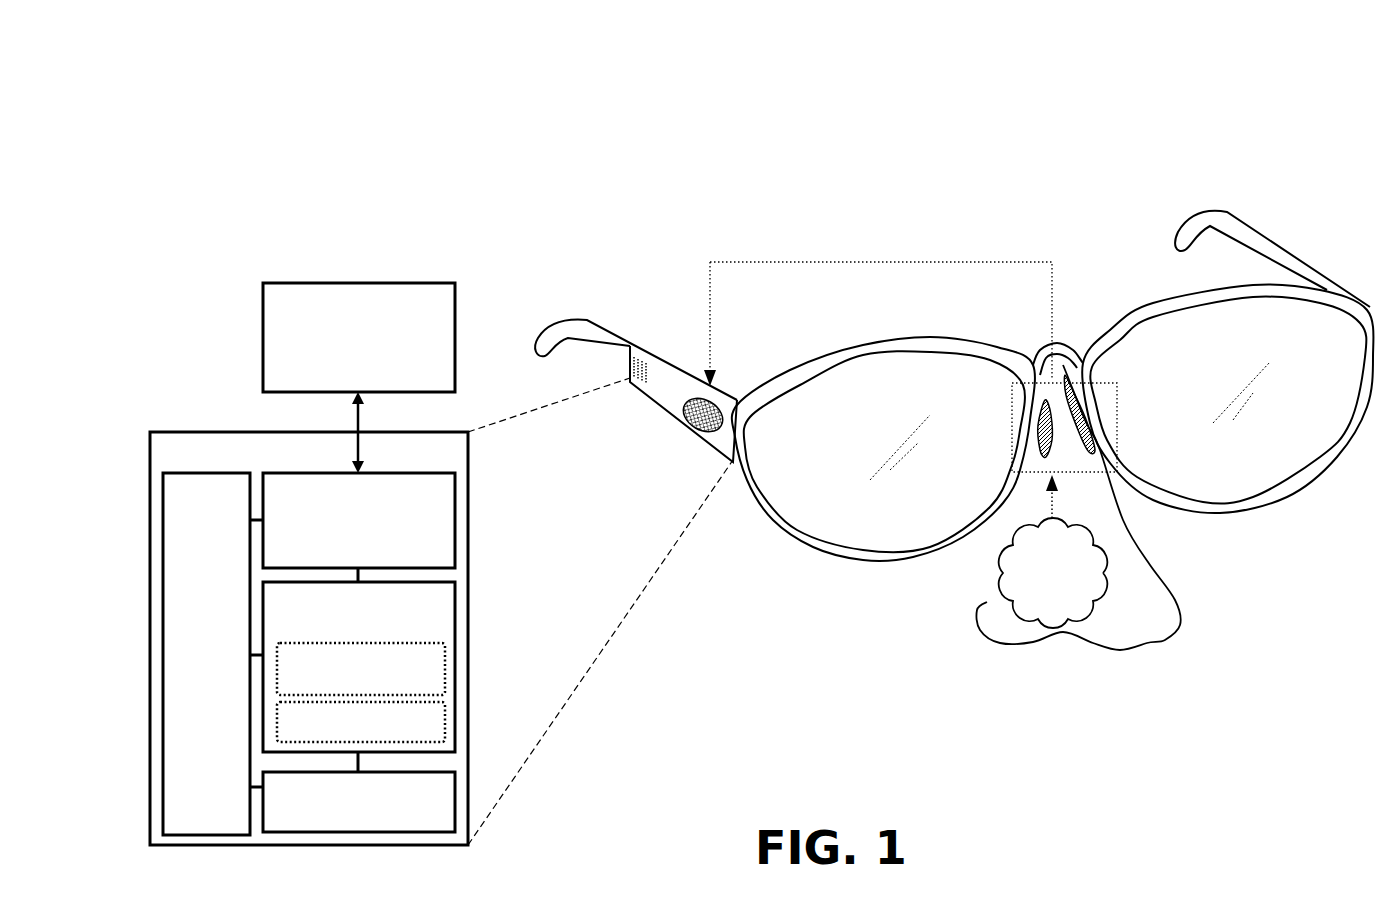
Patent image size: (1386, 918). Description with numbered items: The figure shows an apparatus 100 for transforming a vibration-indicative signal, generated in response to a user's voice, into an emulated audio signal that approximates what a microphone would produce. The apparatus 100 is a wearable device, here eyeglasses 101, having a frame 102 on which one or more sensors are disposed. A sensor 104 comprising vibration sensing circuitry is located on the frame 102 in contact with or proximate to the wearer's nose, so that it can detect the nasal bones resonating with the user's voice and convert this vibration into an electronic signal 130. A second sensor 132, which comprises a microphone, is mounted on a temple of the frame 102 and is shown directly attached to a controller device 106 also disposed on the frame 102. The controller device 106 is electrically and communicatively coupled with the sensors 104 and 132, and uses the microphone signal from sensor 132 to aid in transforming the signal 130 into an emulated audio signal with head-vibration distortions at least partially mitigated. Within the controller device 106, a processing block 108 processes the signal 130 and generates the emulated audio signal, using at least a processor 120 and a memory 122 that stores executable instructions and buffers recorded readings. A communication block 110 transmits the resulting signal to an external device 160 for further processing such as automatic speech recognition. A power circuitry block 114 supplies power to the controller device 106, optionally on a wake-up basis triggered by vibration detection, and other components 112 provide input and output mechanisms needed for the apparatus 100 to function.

The apparatus 100 is at (765, 133).
The eyeglasses 101 is at (1183, 200).
The frame 102 is at (790, 535).
The sensor 104 is at (1120, 388).
The controller device 106 is at (338, 463).
The processing block 108 is at (343, 638).
The communication block 110 is at (343, 556).
The other components 112 is at (343, 827).
The power circuitry block 114 is at (192, 691).
The processor 120 is at (361, 669).
The memory 122 is at (361, 722).
The signal 130 is at (973, 262).
The sensor 132 is at (687, 402).
The external device 160 is at (343, 358).